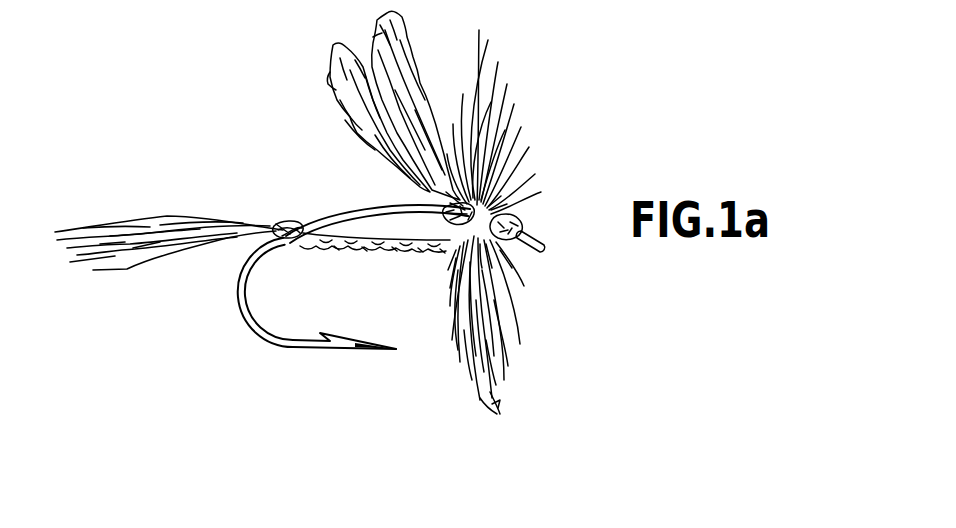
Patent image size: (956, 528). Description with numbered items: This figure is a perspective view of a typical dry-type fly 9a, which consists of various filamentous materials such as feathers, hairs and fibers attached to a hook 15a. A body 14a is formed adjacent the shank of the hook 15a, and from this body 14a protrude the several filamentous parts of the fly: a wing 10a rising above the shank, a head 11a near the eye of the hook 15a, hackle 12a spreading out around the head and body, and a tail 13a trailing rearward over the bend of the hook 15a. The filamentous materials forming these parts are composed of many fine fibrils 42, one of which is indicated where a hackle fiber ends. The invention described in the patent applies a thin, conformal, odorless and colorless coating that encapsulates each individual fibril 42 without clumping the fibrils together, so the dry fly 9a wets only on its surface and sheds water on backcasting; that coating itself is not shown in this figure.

The dry-type fly 9a is at (537, 83).
The wing 10a is at (403, 27).
The head 11a is at (522, 222).
The hackle 12a is at (500, 328).
The tail 13a is at (120, 271).
The body 14a is at (387, 243).
The hook 15a is at (303, 352).
The fibrils 42 is at (493, 417).